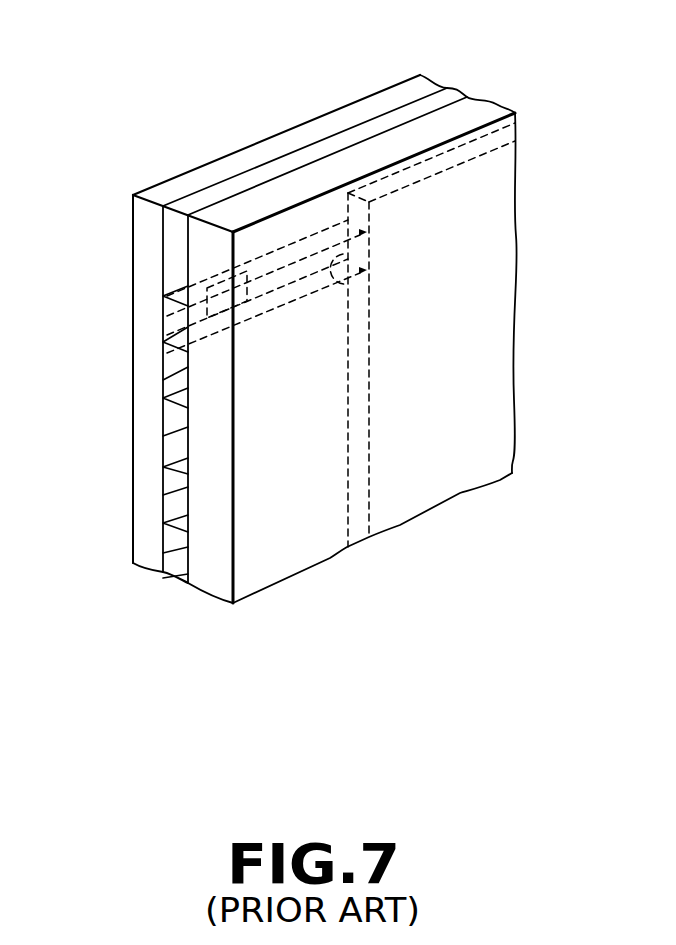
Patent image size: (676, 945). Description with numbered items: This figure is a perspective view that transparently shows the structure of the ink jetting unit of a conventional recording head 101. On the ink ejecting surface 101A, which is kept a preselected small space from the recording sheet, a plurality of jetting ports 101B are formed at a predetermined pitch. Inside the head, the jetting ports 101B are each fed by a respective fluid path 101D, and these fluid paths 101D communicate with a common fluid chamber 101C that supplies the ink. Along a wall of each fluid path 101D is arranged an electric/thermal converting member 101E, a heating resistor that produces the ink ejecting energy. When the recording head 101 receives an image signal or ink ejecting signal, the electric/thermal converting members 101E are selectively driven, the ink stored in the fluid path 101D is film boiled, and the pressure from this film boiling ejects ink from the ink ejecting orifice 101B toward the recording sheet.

The recording head 101 is at (298, 123).
The ink ejecting surface 101A is at (188, 619).
The jetting ports 101B is at (170, 320).
The common fluid chamber 101C is at (493, 243).
The fluid paths 101D is at (349, 284).
The electric/thermal converting member 101E is at (247, 308).